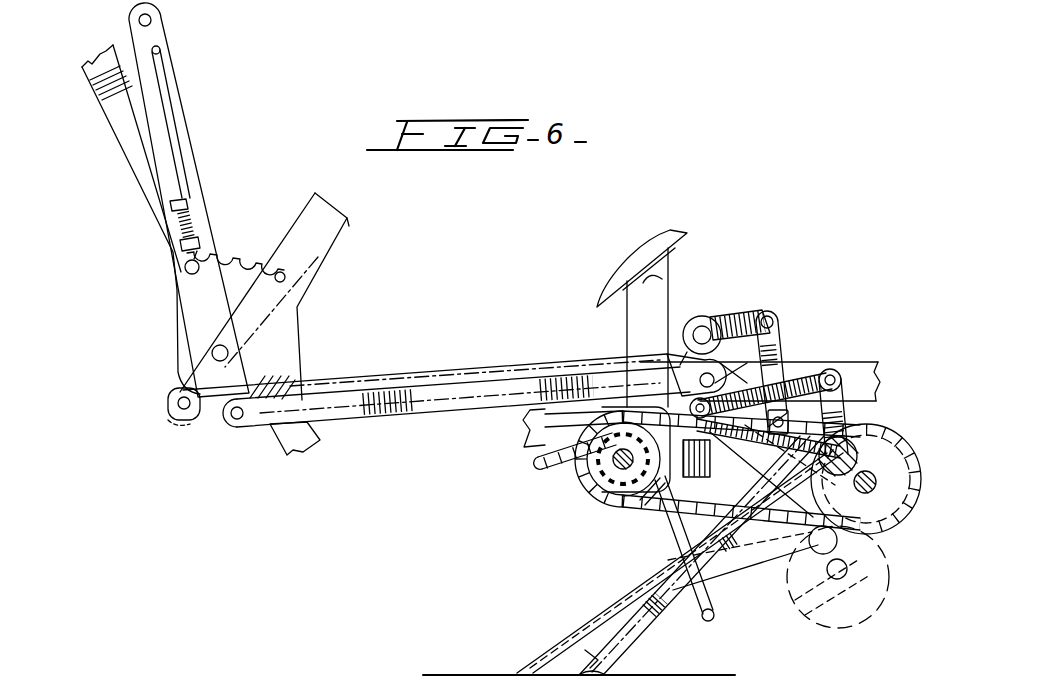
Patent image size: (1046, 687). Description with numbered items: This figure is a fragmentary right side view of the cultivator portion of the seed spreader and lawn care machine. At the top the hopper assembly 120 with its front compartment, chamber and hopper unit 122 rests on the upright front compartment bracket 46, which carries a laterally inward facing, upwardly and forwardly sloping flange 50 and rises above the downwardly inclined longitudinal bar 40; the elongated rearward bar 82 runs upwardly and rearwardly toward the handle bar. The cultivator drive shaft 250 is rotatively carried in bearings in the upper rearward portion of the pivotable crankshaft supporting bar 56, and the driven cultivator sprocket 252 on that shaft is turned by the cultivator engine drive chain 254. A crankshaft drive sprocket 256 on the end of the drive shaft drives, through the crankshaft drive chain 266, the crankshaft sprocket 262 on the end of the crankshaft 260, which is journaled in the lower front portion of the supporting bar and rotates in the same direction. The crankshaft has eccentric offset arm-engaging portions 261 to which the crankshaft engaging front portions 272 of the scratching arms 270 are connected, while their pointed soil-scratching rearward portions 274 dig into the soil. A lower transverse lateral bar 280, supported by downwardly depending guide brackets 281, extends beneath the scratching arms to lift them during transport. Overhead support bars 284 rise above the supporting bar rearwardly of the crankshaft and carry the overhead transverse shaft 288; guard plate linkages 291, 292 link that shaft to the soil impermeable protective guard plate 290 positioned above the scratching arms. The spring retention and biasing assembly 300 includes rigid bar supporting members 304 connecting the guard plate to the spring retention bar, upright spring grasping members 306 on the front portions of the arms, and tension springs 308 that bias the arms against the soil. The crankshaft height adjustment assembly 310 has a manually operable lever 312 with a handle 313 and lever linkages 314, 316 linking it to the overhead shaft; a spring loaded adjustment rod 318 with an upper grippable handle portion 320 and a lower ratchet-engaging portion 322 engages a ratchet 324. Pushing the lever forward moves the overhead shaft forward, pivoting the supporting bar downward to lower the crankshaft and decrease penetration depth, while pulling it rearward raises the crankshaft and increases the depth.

The downwardly inclined longitudinal bar 40 is at (537, 430).
The front compartment bracket 46 is at (627, 327).
The flange 50 is at (653, 280).
The pivotable crankshaft supporting bar 56 is at (628, 513).
The elongated rearward bar 82 is at (113, 135).
The hopper assembly 120 is at (661, 259).
The front compartment, chamber and hopper unit 122 is at (638, 253).
The cultivator drive shaft 250 is at (623, 469).
The driven cultivator sprocket 252 is at (590, 467).
The cultivator engine drive chain 254 is at (543, 475).
The crankshaft drive sprocket 256 is at (658, 455).
The crankshaft 260 is at (872, 493).
The eccentric offset scratching arm-engaging portion 261 is at (842, 382).
The crankshaft sprocket 262 is at (907, 450).
The crankshaft drive chain 266 is at (650, 510).
The scratching arm 270 is at (633, 643).
The crankshaft engaging front portion 272 is at (838, 522).
The pointed soil-scratching rearward portion 274 is at (573, 633).
The lower transverse lateral bar 280 is at (714, 615).
The guide bracket 281 is at (690, 563).
The overhead support bar 284 is at (683, 330).
The overhead transverse shaft 288 is at (708, 331).
The protective guard plate 290 is at (770, 462).
The guard plate linkage 291 is at (773, 310).
The guard plate linkage 292 is at (783, 333).
The spring retention and biasing assembly 300 is at (792, 378).
The rigid bar supporting member 304 is at (663, 372).
The upright spring grasping member 306 is at (834, 372).
The tension spring 308 is at (787, 367).
The crankshaft height adjustment assembly 310 is at (181, 199).
The manually operable lever 312 is at (183, 107).
The handle 313 is at (152, 20).
The lever linkage 314 is at (413, 413).
The lever linkage 316 is at (740, 316).
The spring loaded adjustment rod 318 is at (178, 199).
The upper manually grippable handle portion 320 is at (160, 50).
The lower ratchet-engaging portion 322 is at (185, 272).
The ratchet 324 is at (243, 258).